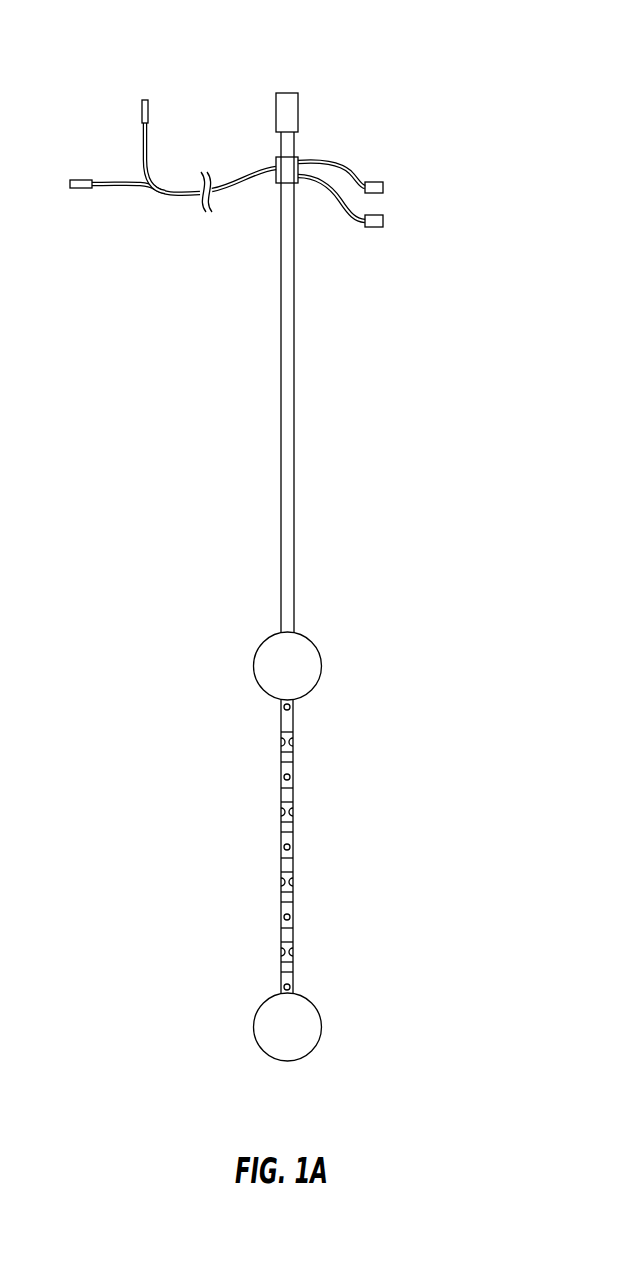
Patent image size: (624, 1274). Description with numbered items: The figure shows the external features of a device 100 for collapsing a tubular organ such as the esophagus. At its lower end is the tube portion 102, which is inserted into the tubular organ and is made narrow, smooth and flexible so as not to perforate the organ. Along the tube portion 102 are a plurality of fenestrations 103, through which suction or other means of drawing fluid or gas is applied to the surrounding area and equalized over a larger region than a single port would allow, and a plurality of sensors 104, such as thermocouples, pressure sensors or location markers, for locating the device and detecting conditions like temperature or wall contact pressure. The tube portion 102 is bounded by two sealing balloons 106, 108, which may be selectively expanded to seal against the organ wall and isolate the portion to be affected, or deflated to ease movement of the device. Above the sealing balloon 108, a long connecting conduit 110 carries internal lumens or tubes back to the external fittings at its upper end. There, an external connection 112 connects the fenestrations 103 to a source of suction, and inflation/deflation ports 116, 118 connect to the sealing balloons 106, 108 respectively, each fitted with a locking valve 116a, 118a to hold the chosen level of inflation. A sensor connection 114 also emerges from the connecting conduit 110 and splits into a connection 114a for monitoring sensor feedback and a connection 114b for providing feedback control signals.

The device for collapsing a tubular organ 100 is at (390, 55).
The tube portion 102 is at (295, 843).
The fenestrations 103 is at (290, 709).
The sensors 104 is at (281, 725).
The sealing balloon 106 is at (305, 1039).
The sealing balloon 108 is at (305, 678).
The connecting conduit 110 is at (295, 600).
The external connection 112 is at (288, 93).
The sensor connection 114 is at (228, 187).
The connection 114a is at (80, 179).
The connection 114b is at (149, 108).
The inflation/deflation port 116 is at (326, 162).
The locking valve 116a is at (375, 182).
The inflation/deflation port 118 is at (330, 202).
The locking valve 118a is at (372, 227).